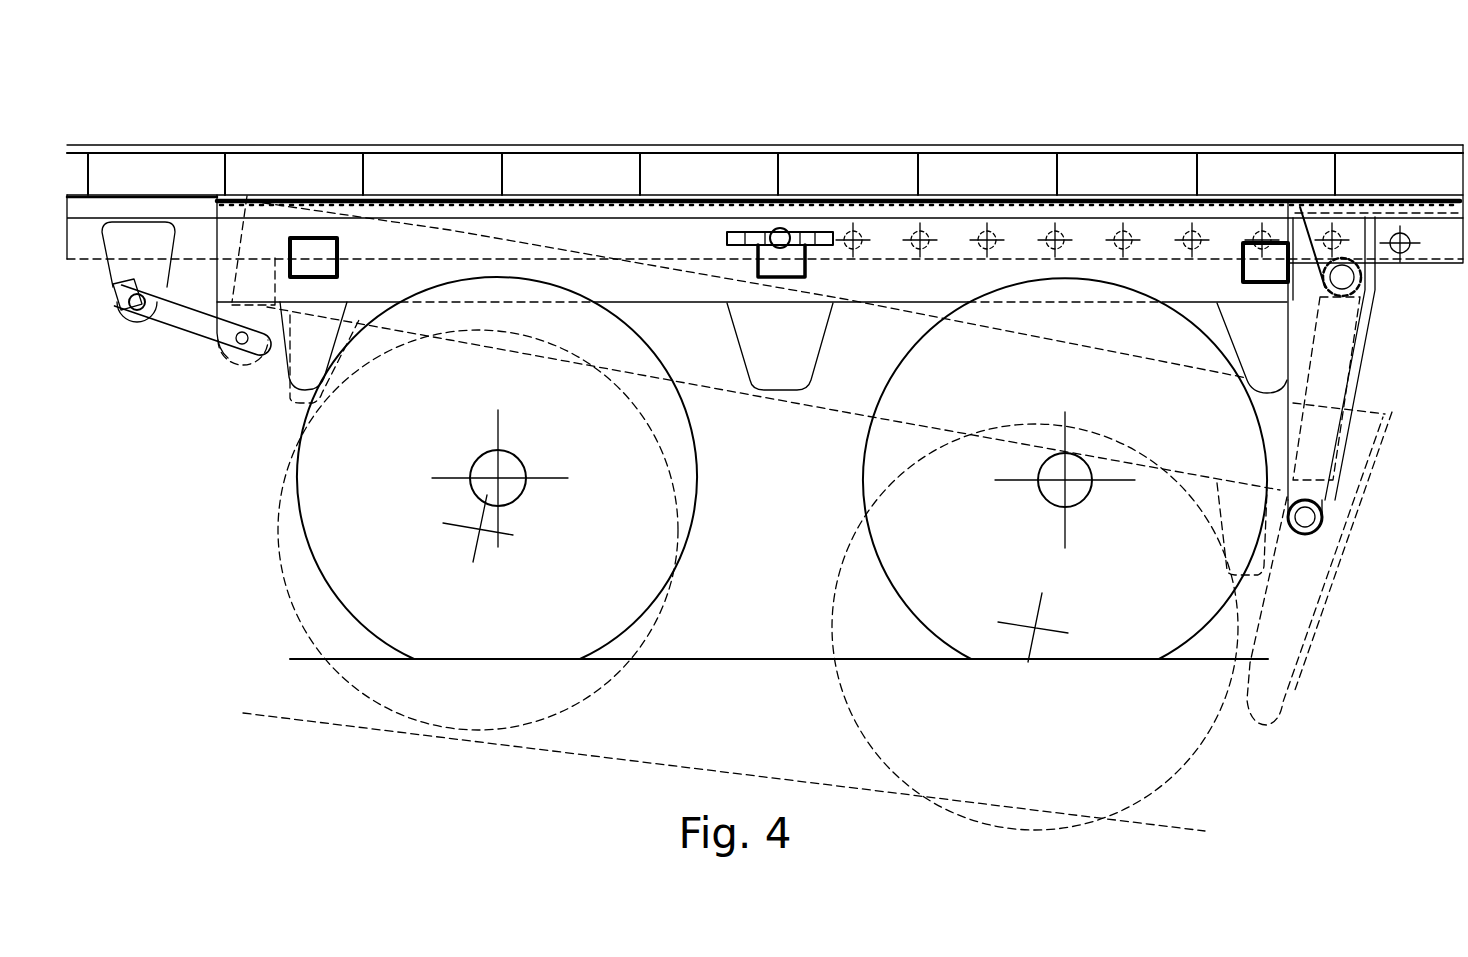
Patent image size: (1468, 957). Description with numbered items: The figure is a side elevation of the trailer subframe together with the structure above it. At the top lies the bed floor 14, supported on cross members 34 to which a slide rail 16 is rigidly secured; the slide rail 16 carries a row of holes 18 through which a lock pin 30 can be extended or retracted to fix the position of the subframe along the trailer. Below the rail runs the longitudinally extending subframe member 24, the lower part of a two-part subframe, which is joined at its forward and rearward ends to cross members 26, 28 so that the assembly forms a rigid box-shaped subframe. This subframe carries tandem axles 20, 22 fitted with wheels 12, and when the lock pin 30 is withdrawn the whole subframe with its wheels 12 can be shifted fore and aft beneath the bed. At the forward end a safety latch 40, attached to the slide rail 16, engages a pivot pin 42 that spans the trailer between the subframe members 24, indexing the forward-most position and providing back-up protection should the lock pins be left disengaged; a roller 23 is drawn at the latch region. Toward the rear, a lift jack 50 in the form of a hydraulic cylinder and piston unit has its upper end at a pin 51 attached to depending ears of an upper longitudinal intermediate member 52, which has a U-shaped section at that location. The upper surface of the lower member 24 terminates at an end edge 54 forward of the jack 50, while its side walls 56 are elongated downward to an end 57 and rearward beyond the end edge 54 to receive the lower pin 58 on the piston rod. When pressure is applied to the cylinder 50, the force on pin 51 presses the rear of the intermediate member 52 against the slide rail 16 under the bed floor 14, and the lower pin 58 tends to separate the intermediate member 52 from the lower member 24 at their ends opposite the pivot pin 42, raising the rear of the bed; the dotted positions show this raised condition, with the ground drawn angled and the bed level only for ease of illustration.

The wheels 12 is at (698, 450).
The bed floor 14 is at (856, 147).
The slide rail 16 is at (1437, 228).
The holes 18 is at (1403, 255).
The axle 20 is at (523, 495).
The axle 22 is at (1043, 503).
The roller 23 is at (242, 363).
The longitudinally extending subframe member 24 is at (553, 227).
The cross member 26 is at (335, 278).
The cross member 28 is at (1243, 275).
The lock pin 30 is at (727, 233).
The cross members 34 is at (920, 177).
The safety latch 40 is at (180, 315).
The pivot pin 42 is at (224, 350).
The jack 50 is at (1338, 342).
The pin 51 is at (1357, 282).
The intermediate member 52 is at (1317, 227).
The end edge 54 is at (1284, 207).
The side walls 56 is at (1286, 533).
The end 57 is at (1267, 728).
The lower pin 58 is at (1320, 518).